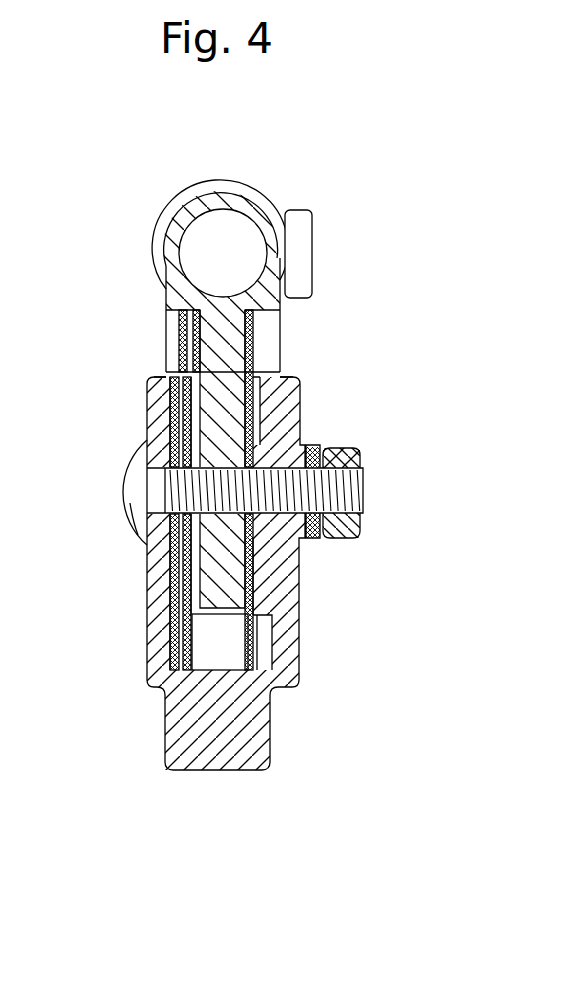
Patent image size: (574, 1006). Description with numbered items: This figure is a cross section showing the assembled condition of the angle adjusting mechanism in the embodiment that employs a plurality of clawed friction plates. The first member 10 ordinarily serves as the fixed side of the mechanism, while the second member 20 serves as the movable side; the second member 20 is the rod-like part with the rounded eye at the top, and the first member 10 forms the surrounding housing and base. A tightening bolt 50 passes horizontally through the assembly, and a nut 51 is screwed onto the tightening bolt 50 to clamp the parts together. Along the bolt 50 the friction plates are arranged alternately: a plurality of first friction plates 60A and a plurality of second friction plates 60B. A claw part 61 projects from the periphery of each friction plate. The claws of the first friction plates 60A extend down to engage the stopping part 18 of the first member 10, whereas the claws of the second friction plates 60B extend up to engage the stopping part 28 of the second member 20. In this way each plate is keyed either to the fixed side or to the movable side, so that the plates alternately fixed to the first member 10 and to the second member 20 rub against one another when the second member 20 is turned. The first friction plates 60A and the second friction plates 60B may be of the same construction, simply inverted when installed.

The first member 10 is at (230, 750).
The stopping part 18 is at (260, 655).
The second member 20 is at (283, 208).
The stopping part 28 is at (280, 337).
The tightening bolt 50 is at (135, 483).
The nut 51 is at (352, 450).
The first friction plates 60A is at (173, 587).
The second friction plates 60B is at (163, 373).
The claw part 61 is at (262, 638).